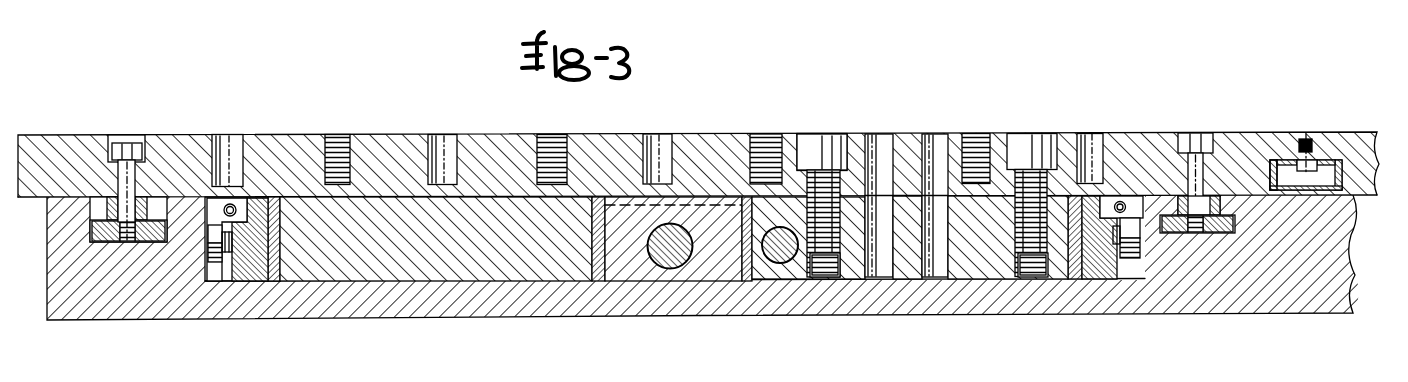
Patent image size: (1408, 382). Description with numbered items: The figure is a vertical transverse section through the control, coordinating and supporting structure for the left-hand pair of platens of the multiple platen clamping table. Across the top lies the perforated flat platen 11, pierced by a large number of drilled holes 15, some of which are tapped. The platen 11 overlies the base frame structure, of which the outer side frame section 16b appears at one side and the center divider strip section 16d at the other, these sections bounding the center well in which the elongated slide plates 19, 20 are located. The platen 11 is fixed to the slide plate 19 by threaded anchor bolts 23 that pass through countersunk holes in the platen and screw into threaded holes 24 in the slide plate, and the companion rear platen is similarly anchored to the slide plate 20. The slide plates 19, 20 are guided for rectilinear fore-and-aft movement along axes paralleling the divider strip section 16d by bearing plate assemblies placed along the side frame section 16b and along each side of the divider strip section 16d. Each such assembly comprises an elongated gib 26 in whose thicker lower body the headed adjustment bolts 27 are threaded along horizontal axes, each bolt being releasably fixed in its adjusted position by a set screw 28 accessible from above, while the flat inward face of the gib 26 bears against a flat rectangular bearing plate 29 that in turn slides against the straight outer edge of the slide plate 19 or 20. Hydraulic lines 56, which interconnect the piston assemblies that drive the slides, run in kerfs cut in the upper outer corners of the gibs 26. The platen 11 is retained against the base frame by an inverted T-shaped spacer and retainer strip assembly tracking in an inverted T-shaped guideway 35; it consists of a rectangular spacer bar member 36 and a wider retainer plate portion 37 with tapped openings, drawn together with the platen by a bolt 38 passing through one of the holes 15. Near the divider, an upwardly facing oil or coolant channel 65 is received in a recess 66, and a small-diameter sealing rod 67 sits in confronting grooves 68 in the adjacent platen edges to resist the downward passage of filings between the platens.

The front left-hand platen 11 is at (382, 135).
The drilled holes 15 is at (803, 133).
The outer side frame section 16b is at (122, 318).
The center divider strip section 16d is at (1275, 302).
The slide plate 19 is at (980, 271).
The slide plate 20 is at (455, 265).
The threaded anchor bolt 23 is at (826, 148).
The threaded hole 24 is at (828, 280).
The gib 26 is at (252, 282).
The headed adjustment bolt 27 is at (213, 262).
The set screw 28 is at (263, 193).
The bearing plate 29 is at (276, 283).
The guideway 35 is at (110, 244).
The spacer bar member 36 is at (99, 206).
The retainer plate portion 37 is at (95, 233).
The bolt 38 is at (126, 143).
The hydraulic line 56 is at (215, 206).
The oil receiving and conveying channel 65 is at (1290, 190).
The recess 66 is at (1279, 156).
The sealing rod 67 is at (1314, 152).
The groove 68 is at (1302, 138).